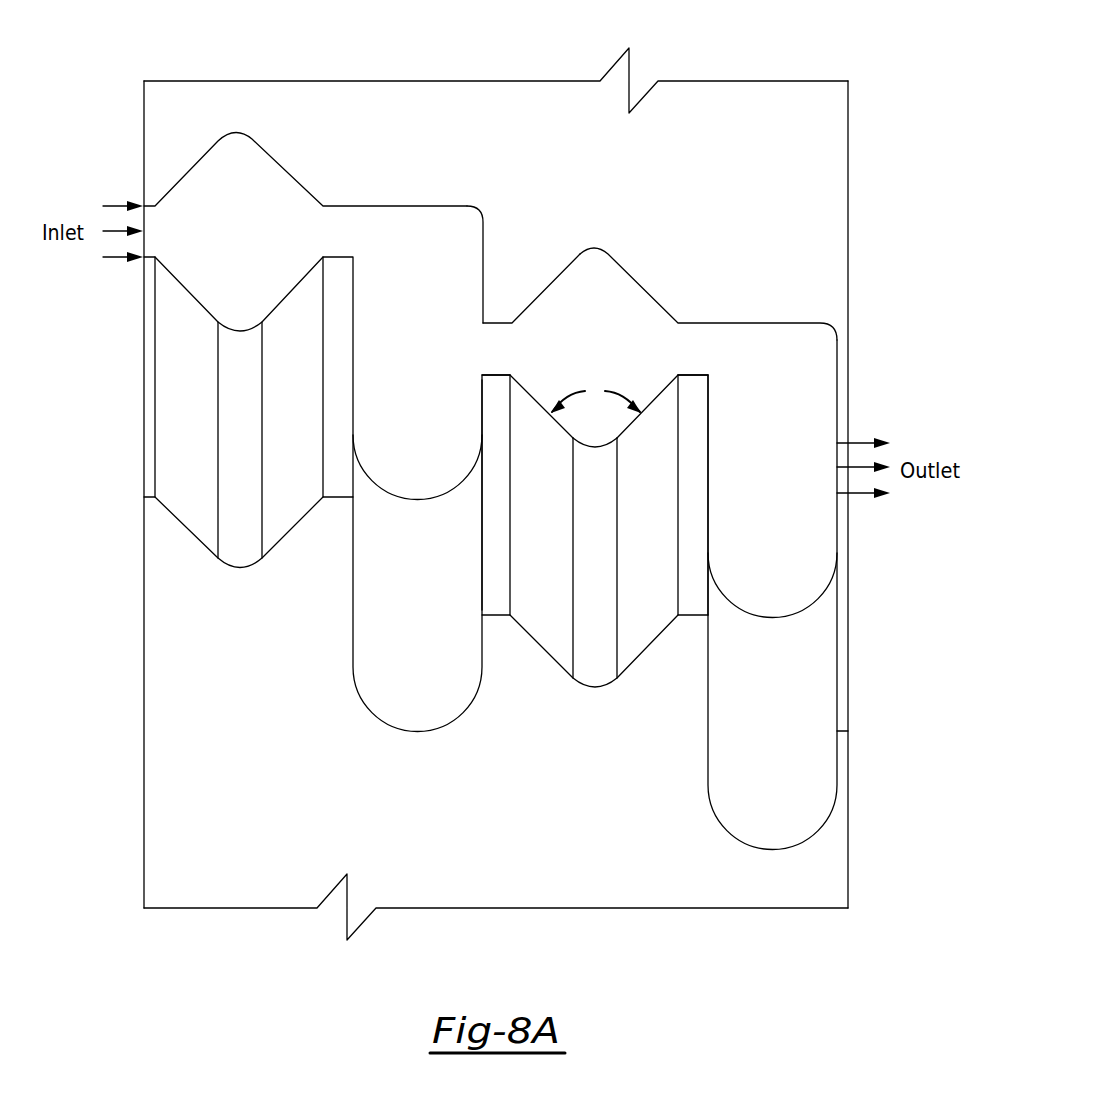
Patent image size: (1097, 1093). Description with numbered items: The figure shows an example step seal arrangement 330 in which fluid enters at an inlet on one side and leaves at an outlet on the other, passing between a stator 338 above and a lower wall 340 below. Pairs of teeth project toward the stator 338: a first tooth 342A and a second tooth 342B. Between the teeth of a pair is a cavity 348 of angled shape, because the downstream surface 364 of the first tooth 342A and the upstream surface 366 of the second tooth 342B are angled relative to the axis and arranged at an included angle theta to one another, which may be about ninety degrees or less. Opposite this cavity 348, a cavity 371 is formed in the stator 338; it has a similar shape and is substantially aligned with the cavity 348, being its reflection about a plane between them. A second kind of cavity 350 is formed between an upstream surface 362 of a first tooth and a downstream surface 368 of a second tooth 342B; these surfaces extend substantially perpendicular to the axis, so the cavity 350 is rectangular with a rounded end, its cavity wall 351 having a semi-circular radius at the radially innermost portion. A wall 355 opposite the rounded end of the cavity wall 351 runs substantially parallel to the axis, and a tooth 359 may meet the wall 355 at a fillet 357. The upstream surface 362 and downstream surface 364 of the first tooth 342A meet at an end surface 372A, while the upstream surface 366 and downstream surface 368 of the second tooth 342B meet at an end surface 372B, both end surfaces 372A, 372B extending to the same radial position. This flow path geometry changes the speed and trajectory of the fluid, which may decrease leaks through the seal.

The step seal arrangement 330 is at (489, 64).
The stator 338 is at (745, 112).
The bottom wall 340 is at (660, 897).
The first tooth 342A is at (502, 428).
The second tooth 342B is at (692, 427).
The cavity 348 is at (595, 365).
The cavity 350 is at (407, 475).
The cavity wall 351 is at (415, 503).
The wall 355 is at (383, 205).
The fillet 357 is at (475, 208).
The tooth 359 is at (503, 298).
The upstream surface 362 is at (482, 392).
The downstream surface 364 is at (533, 413).
The upstream surface 366 is at (655, 413).
The downstream surface 368 is at (353, 278).
The cavity 371 is at (613, 272).
The end surface 372A is at (497, 375).
The end surface 372B is at (693, 375).